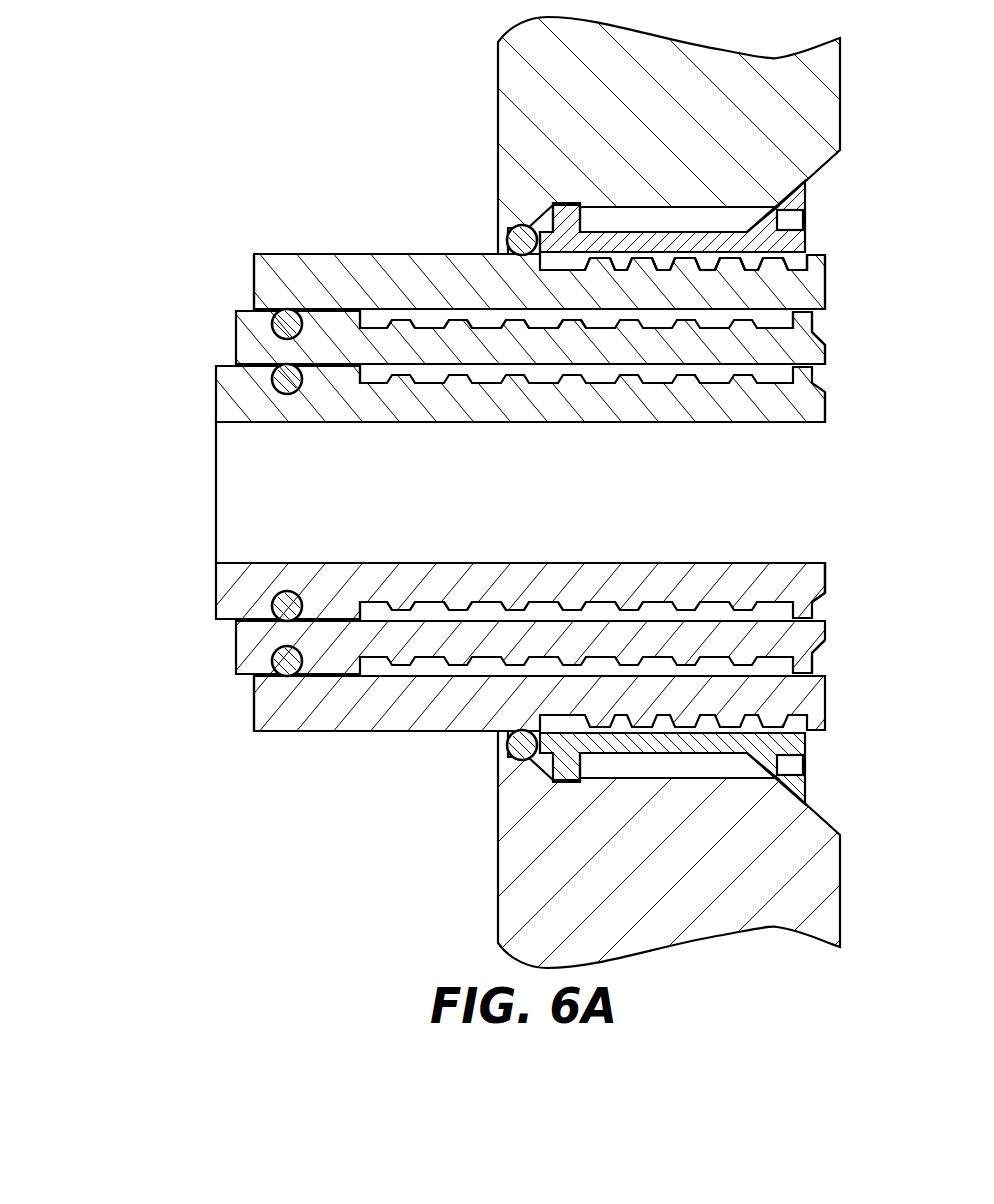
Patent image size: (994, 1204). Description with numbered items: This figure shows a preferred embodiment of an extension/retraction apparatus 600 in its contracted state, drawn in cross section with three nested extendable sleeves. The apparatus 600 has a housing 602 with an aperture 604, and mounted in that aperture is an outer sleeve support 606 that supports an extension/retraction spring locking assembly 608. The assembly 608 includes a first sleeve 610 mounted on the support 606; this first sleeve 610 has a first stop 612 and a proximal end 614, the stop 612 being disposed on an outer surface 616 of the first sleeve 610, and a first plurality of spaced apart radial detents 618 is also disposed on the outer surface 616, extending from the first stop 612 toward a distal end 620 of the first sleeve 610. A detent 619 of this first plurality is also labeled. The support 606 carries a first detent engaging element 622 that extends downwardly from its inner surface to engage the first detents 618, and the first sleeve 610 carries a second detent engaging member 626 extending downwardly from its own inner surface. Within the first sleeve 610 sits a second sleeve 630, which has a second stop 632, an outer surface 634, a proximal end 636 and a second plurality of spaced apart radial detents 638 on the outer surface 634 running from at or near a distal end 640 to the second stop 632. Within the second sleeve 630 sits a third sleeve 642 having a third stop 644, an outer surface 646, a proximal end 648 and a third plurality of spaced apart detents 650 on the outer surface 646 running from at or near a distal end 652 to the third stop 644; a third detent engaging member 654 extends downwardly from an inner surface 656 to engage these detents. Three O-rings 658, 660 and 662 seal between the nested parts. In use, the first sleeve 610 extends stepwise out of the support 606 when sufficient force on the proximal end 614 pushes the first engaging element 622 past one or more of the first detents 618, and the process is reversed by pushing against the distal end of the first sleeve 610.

The extension/retraction apparatus 600 is at (108, 461).
The housing 602 is at (680, 109).
The aperture 604 is at (814, 200).
The outer sleeve support 606 is at (704, 202).
The extension/retraction spring locking assembly 608 is at (840, 493).
The first sleeve 610 is at (367, 277).
The first stop 612 is at (538, 238).
The proximal end 614 is at (254, 268).
The outer surface 616 is at (657, 253).
The first plurality of spaced apart radial detents 618 is at (730, 262).
The thread groove 619 is at (709, 271).
The distal end 620 is at (827, 275).
The first detent engaging element 622 is at (804, 255).
The second detent engaging member 626 is at (780, 317).
The second sleeve 630 is at (429, 338).
The second stop 632 is at (357, 318).
The outer surface 634 is at (488, 330).
The proximal end 636 is at (236, 334).
The second plurality of spaced apart radial detents 638 is at (577, 322).
The distal end 640 is at (827, 350).
The third sleeve 642 is at (420, 398).
The third stop 644 is at (358, 367).
The outer surface 646 is at (373, 597).
The proximal end 648 is at (216, 545).
The third plurality of spaced apart detents 650 is at (460, 600).
The distal end 652 is at (825, 573).
The third detent engaging member 654 is at (778, 610).
The inner surface 656 is at (612, 603).
The O-ring 658 is at (287, 395).
The O-ring 660 is at (287, 309).
The O-ring 662 is at (521, 226).